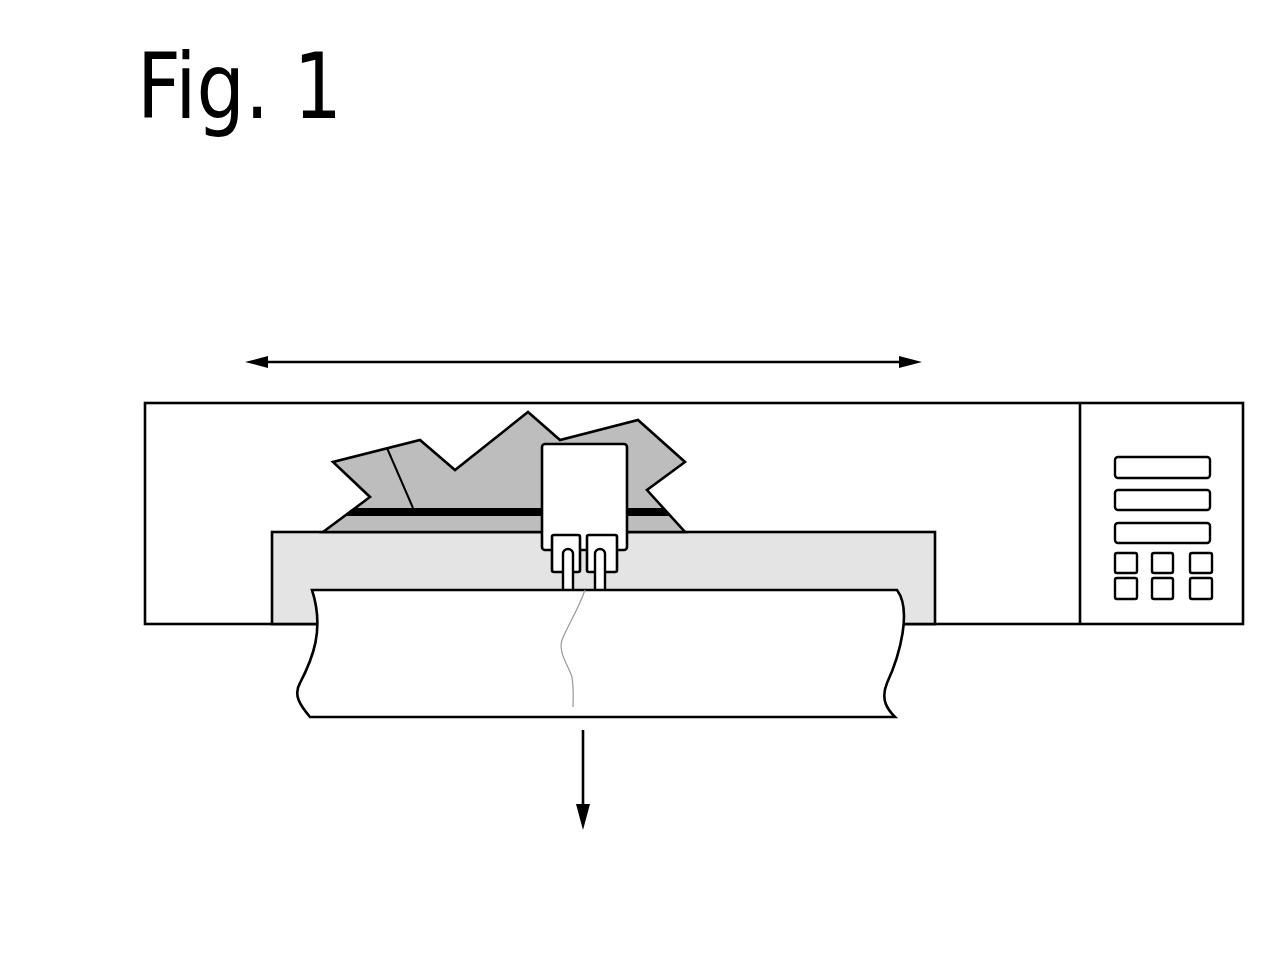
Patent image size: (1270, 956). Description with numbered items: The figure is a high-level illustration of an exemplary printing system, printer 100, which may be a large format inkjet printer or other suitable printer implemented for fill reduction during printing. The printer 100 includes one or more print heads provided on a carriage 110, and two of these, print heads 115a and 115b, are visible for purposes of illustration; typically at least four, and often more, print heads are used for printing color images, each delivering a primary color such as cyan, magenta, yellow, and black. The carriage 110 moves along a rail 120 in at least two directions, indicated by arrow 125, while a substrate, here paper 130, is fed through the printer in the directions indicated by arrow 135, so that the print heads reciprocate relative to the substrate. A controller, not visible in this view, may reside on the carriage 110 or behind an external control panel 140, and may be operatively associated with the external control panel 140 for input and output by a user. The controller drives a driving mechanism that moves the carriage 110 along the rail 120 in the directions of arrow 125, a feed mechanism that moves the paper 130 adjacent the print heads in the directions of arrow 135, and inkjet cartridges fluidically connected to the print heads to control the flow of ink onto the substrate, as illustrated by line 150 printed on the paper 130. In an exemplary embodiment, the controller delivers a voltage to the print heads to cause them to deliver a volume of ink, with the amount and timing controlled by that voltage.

The printer 100 is at (1068, 252).
The carriage 110 is at (604, 501).
The print head 115a is at (561, 596).
The print head 115b is at (604, 594).
The rail 120 is at (391, 449).
The arrow 125 is at (648, 360).
The paper 130 is at (300, 688).
The arrow 135 is at (580, 778).
The external control panel 140 is at (1141, 430).
The line 150 is at (572, 676).